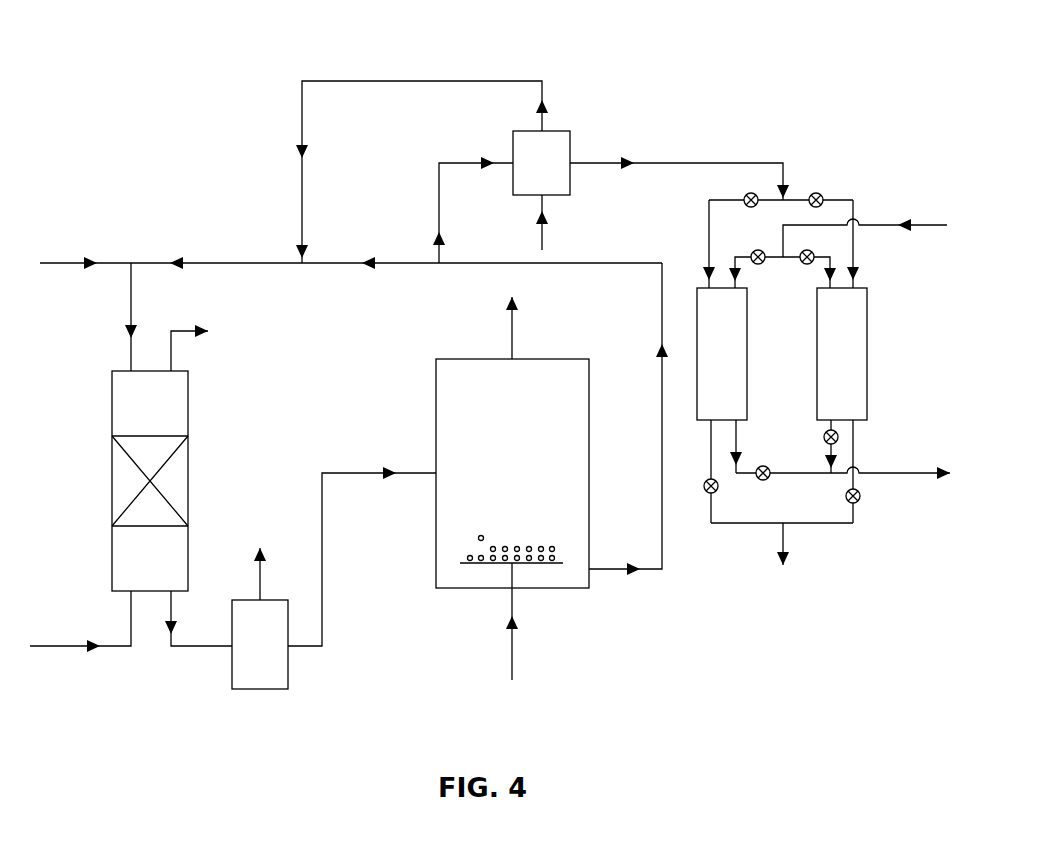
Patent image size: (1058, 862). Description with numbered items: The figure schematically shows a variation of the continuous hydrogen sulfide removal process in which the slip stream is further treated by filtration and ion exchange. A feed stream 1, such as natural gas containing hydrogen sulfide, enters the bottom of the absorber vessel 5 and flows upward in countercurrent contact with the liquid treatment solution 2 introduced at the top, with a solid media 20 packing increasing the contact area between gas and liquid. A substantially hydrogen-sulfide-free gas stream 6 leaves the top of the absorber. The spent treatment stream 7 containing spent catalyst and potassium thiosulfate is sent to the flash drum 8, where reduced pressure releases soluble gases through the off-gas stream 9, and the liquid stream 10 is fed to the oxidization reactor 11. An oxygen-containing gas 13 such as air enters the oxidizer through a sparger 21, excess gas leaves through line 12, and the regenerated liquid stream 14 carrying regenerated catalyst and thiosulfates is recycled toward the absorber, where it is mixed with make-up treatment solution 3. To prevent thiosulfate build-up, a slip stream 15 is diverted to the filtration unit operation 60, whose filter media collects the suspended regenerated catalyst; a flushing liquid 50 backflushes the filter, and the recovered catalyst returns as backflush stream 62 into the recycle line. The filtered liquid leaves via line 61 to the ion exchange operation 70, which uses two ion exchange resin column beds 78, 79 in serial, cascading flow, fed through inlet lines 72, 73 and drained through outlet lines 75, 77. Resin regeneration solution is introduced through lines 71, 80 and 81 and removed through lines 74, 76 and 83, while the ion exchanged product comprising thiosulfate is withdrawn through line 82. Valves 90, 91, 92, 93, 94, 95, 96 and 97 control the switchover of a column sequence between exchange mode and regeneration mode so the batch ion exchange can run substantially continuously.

The feed stream 1 is at (60, 646).
The liquid treatment solution 2 is at (131, 297).
The make-up treatment solution 3 is at (68, 263).
The absorber vessel 5 is at (143, 415).
The H2S-free gas stream 6 is at (181, 331).
The spent treatment stream 7 is at (185, 646).
The flash drum 8 is at (253, 657).
The off-gas stream 9 is at (262, 582).
The liquid stream 10 is at (322, 580).
The oxidization reactor 11 is at (500, 444).
The excess oxygen-containing gas line 12 is at (513, 336).
The oxygen-containing gas 13 is at (513, 642).
The regenerated liquid stream 14 is at (664, 563).
The slip stream 15 is at (440, 252).
The solid media 20 is at (180, 484).
The sparger 21 is at (505, 546).
The flushing liquid 50 is at (543, 238).
The filtration unit operation 60 is at (528, 174).
The filtrate line 61 is at (590, 163).
The backflush stream 62 is at (381, 81).
The ion exchange operation 70 is at (868, 378).
The resin regeneration solution inlet line 71 is at (935, 225).
The inlet line to first bed 72 is at (709, 218).
The inlet line to second bed 73 is at (855, 210).
The regeneration solution outlet line 74 is at (892, 473).
The outlet line from first bed 75 is at (697, 416).
The regeneration solution outlet line 76 is at (855, 440).
The outlet line from second bed 77 is at (828, 456).
The ion exchange resin column bed 78 is at (708, 365).
The ion exchange resin column bed 79 is at (828, 365).
The resin regeneration solution line 80 is at (738, 266).
The resin regeneration solution line 81 is at (826, 266).
The ion exchanged product line 82 is at (785, 530).
The regeneration solution outlet line 83 is at (737, 438).
The valve 90 is at (746, 195).
The valve 91 is at (818, 193).
The valve 92 is at (754, 252).
The valve 93 is at (808, 253).
The valve 94 is at (768, 479).
The valve 95 is at (716, 486).
The valve 96 is at (859, 499).
The valve 97 is at (825, 436).